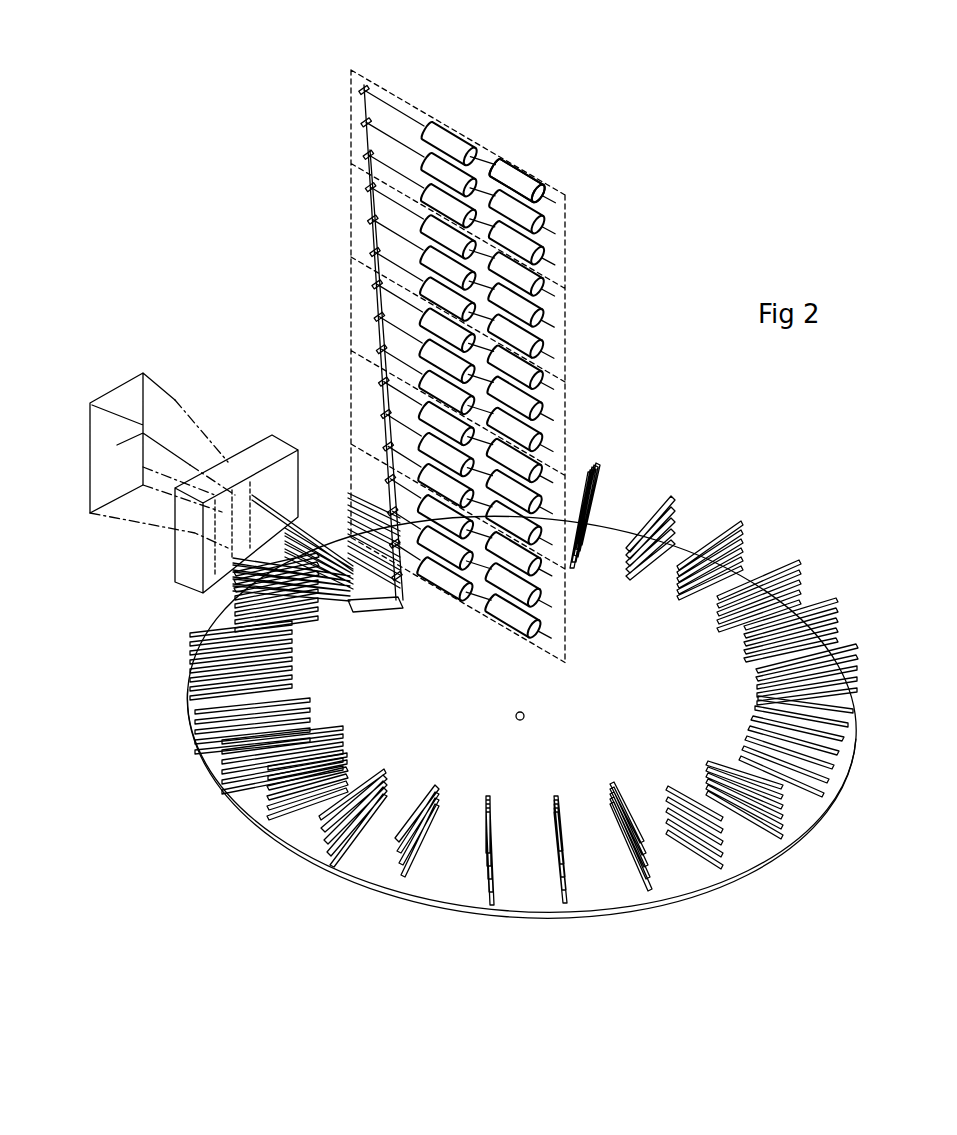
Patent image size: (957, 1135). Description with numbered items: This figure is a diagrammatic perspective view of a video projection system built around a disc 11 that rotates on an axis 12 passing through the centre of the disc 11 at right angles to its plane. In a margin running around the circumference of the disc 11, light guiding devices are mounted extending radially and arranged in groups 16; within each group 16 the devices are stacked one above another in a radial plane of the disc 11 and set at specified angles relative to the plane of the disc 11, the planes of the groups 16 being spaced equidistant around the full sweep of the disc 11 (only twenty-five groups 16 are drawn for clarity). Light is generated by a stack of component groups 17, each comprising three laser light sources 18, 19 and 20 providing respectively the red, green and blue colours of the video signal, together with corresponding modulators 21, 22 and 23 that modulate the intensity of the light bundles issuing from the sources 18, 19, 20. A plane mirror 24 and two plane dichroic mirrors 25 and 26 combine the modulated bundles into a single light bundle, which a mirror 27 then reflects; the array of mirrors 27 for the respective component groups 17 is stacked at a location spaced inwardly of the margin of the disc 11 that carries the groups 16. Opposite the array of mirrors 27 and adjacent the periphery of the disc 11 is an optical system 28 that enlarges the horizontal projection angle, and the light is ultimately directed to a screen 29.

The disc 11 is at (626, 532).
The axis 12 is at (520, 712).
The groups 16 is at (304, 645).
The component groups 17 is at (567, 247).
The laser light source 18 is at (553, 253).
The laser light source 19 is at (548, 232).
The laser light source 20 is at (545, 172).
The modulator 21 is at (365, 202).
The modulator 22 is at (367, 186).
The modulator 23 is at (362, 122).
The plane mirror 24 is at (360, 90).
The plane dichroic mirror 25 is at (364, 153).
The plane dichroic mirror 26 is at (364, 197).
The mirror 27 is at (357, 608).
The optical system 28 is at (260, 440).
The screen 29 is at (130, 378).